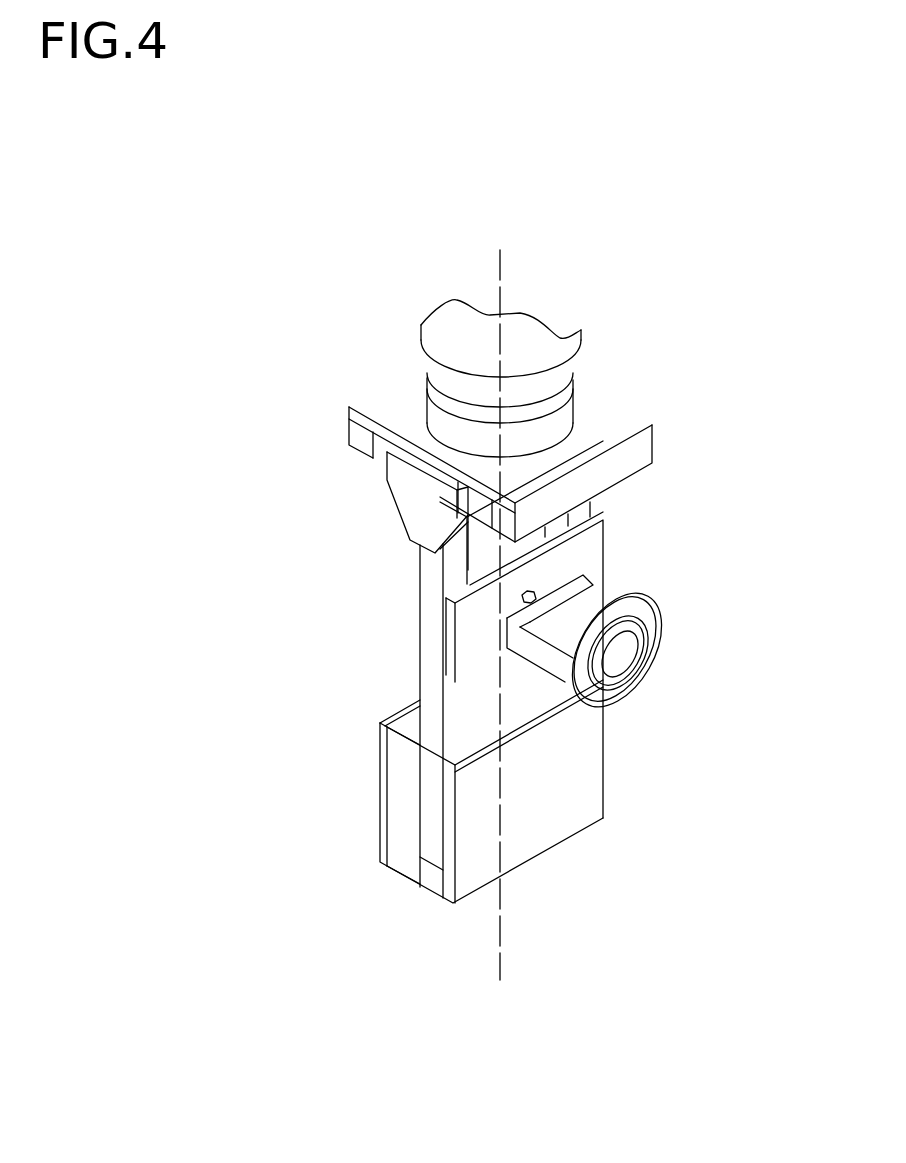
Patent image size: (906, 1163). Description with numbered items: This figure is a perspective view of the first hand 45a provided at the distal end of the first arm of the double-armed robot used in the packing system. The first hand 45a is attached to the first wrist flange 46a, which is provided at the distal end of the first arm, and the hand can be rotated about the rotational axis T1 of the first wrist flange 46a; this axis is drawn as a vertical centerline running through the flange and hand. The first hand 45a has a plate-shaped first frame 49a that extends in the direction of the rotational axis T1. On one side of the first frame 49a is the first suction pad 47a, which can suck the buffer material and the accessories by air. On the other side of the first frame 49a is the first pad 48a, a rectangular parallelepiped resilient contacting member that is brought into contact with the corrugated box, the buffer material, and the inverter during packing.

The first hand 45a is at (352, 285).
The first wrist flange 46a is at (563, 422).
The first suction pad 47a is at (667, 610).
The first pad 48a is at (402, 800).
The first frame 49a is at (432, 643).
The rotational axis T1 is at (501, 599).